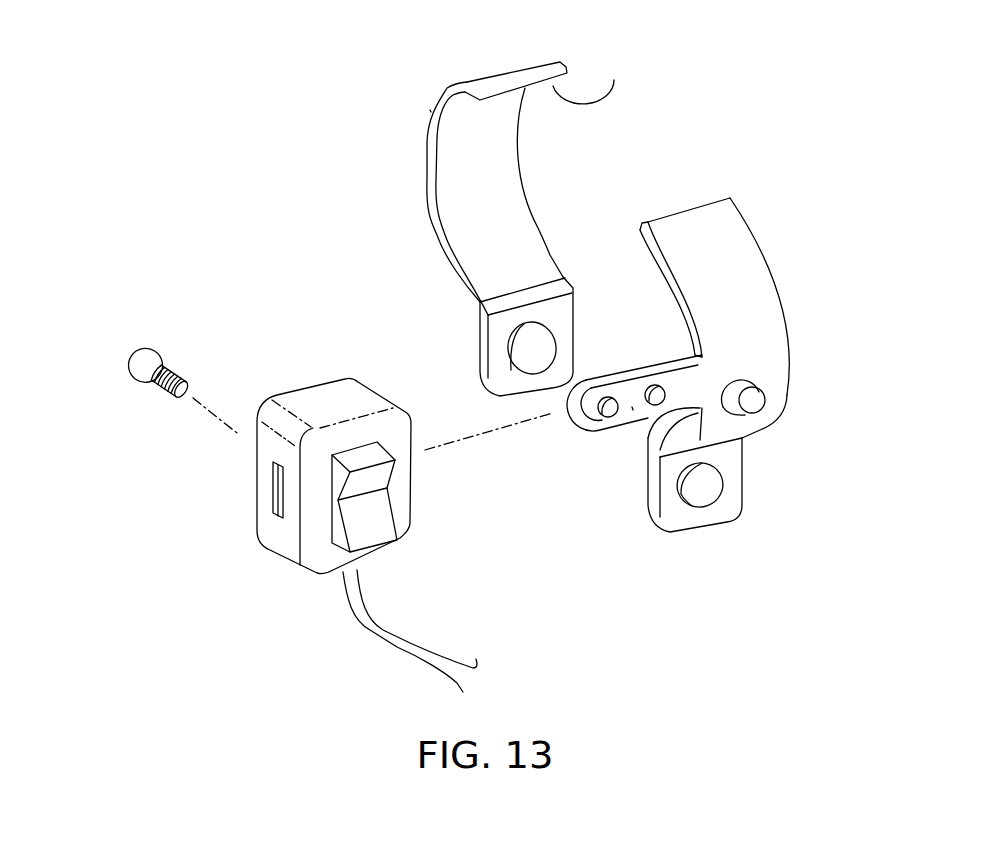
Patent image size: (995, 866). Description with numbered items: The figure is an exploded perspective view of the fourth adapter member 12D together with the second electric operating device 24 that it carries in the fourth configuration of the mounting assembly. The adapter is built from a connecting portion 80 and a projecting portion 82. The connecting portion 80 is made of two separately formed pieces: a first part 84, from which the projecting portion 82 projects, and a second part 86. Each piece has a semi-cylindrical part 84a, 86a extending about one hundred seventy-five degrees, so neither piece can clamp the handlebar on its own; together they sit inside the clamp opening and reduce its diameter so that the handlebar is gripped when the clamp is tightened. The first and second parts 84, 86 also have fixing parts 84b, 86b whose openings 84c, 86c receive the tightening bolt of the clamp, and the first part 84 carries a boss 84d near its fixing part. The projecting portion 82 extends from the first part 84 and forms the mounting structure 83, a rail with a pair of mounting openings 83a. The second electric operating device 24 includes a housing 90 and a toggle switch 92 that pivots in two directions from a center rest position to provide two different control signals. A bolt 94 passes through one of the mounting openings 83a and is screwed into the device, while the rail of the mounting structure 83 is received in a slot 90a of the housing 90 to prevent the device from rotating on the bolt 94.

The attachment device 12D is at (778, 196).
The connecting portion 80 is at (705, 51).
The second part 86 is at (615, 80).
The semi-cylindrical part 86a is at (467, 175).
The fixing part 86b is at (507, 395).
The opening 86c is at (518, 355).
The first part 84 is at (697, 205).
The semi-cylindrical part 84a is at (738, 280).
The fixing part 84b is at (667, 530).
The opening 84c is at (687, 490).
The boss of second clamp member 84d is at (757, 407).
The projecting portion 82 is at (600, 432).
The mounting structure 83 is at (632, 407).
The mounting openings 83a is at (608, 402).
The second electric operating device 24 is at (312, 384).
The housing 90 is at (277, 547).
The slot 90a is at (275, 483).
The toggle switch 92 is at (373, 521).
The bolt 94 is at (177, 367).